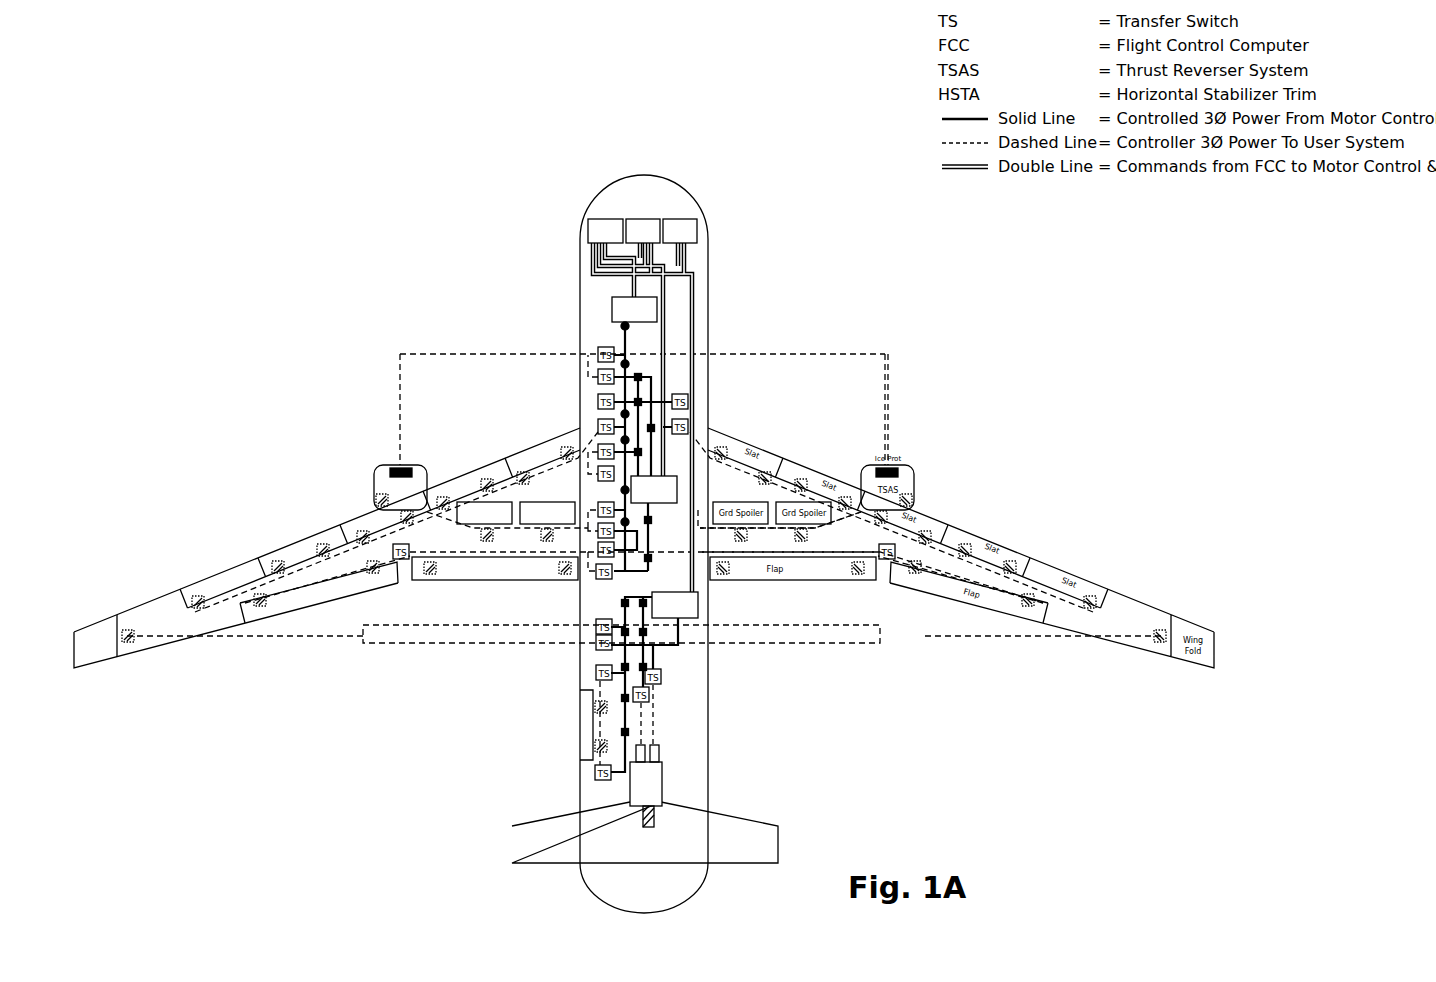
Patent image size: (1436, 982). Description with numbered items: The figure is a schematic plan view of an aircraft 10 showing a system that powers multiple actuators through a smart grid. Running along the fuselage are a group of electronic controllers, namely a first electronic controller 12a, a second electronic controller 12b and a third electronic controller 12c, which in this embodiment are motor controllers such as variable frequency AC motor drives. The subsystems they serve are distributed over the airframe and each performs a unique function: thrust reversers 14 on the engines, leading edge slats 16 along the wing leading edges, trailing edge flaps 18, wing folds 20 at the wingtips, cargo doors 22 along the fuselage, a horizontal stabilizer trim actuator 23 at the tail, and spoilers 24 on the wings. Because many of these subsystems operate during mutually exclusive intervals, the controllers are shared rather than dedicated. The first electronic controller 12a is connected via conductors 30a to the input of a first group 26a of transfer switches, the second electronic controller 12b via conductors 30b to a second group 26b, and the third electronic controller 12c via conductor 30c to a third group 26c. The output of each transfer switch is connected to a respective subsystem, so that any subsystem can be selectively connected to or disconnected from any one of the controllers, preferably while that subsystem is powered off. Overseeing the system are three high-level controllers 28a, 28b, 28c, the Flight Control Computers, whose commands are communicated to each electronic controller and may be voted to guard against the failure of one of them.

The aircraft 10 is at (708, 299).
The first electronic controller 12a is at (612, 305).
The second electronic controller 12b is at (677, 489).
The third electronic controller 12c is at (698, 604).
The thrust reversers 14 is at (374, 498).
The leading edge slats 16 is at (330, 530).
The trailing edge flaps 18 is at (455, 581).
The wing folds 20 is at (118, 650).
The cargo doors 22 is at (577, 707).
The horizontal stabilizer trim actuator (HSTA) 23 is at (662, 785).
The spoilers 24 is at (545, 502).
The first group of transfer switches 26a is at (598, 425).
The second group of transfer switches 26b is at (688, 401).
The third group of transfer switches 26c is at (595, 673).
The first high-level controller 28a is at (604, 218).
The second high-level controller 28b is at (638, 218).
The third high-level controller 28c is at (683, 218).
The conductors 30a is at (621, 326).
The conductors 30b is at (643, 377).
The conductor 30c is at (672, 647).